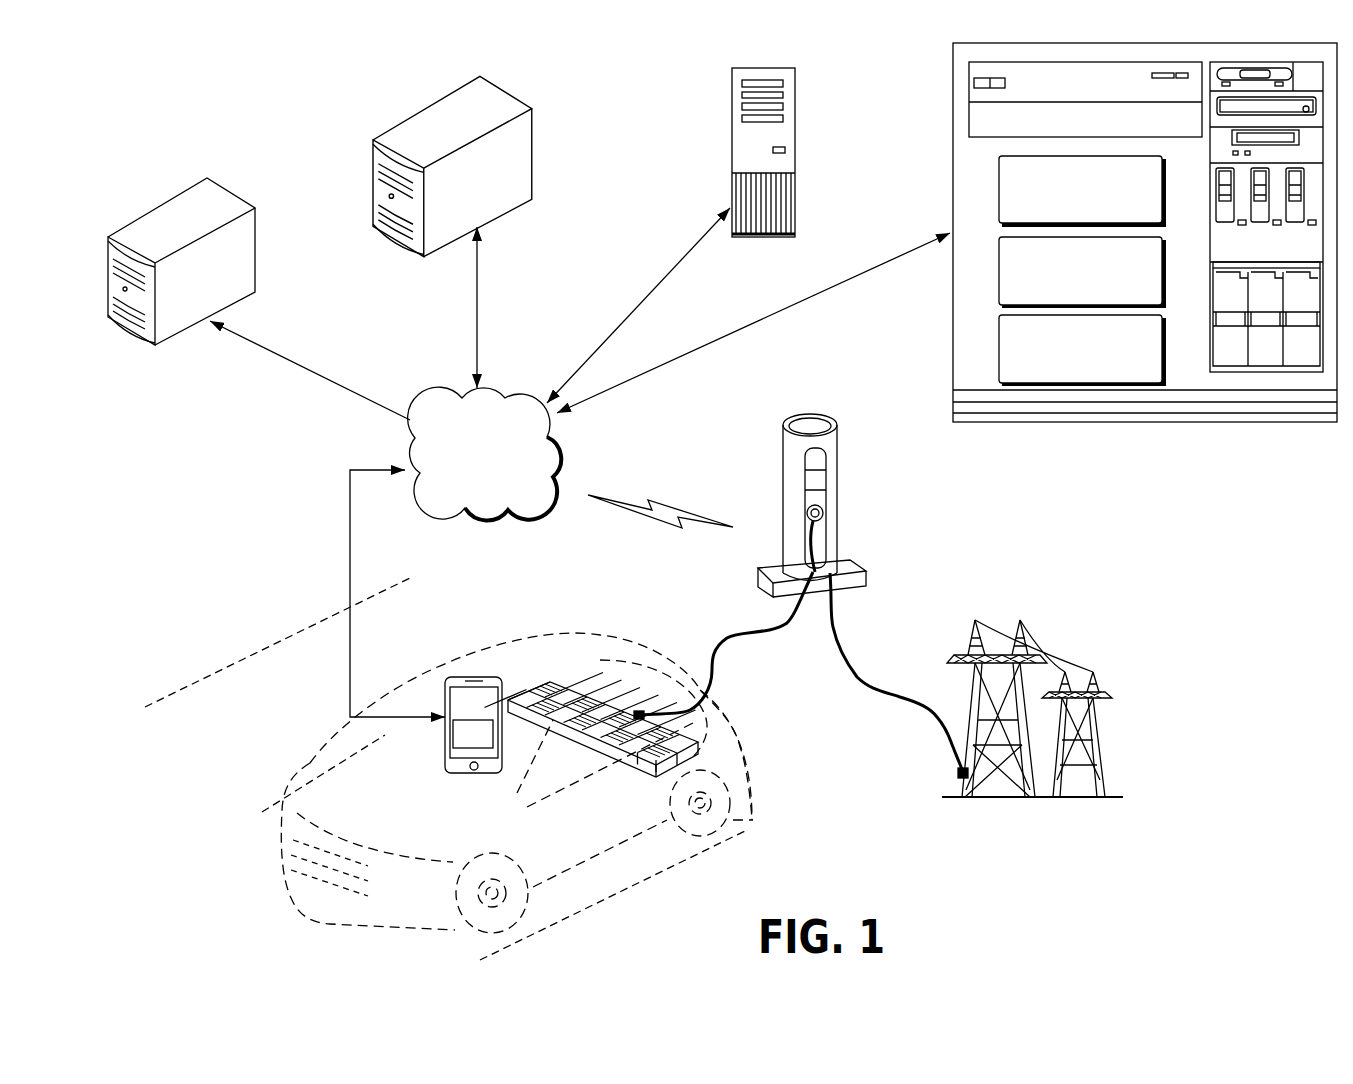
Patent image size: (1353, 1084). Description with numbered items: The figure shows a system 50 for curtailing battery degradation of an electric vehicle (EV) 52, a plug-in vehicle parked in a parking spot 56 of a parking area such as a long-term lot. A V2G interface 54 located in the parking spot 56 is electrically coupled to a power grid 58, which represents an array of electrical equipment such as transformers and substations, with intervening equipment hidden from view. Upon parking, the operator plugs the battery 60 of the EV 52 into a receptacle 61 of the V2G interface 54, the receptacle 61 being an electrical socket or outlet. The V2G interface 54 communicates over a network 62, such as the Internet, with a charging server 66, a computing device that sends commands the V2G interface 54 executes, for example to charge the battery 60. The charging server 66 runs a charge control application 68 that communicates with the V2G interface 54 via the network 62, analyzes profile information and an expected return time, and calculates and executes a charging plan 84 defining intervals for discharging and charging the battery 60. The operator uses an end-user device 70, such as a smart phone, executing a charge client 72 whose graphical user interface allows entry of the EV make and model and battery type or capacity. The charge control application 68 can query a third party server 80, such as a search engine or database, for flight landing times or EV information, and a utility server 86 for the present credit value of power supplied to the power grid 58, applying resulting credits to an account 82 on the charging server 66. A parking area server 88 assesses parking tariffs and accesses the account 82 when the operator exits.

The system 50 is at (122, 102).
The electric vehicle (EV) 52 is at (517, 783).
The V2G interface 54 is at (850, 565).
The parking spot 56 is at (446, 769).
The power grid 58 is at (1063, 798).
The battery 60 is at (684, 760).
The receptacle 61 is at (825, 512).
The network 62 is at (558, 505).
The charging server 66 is at (1120, 280).
The charge control application 68 is at (999, 188).
The end-user device 70 is at (445, 701).
The charge client 72 is at (453, 738).
The third party server 80 is at (404, 120).
The account 82 is at (999, 288).
The charging plan 84 is at (999, 350).
The utility server 86 is at (166, 346).
The parking area server 88 is at (732, 96).